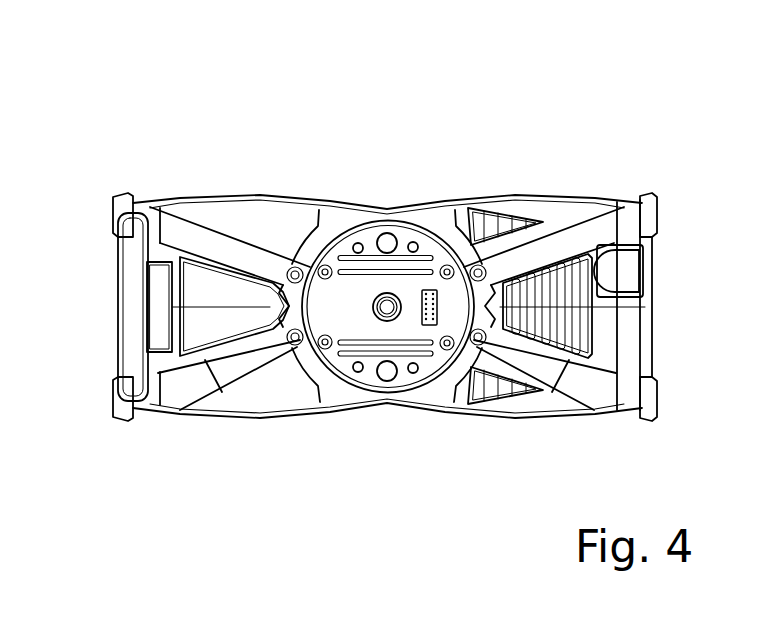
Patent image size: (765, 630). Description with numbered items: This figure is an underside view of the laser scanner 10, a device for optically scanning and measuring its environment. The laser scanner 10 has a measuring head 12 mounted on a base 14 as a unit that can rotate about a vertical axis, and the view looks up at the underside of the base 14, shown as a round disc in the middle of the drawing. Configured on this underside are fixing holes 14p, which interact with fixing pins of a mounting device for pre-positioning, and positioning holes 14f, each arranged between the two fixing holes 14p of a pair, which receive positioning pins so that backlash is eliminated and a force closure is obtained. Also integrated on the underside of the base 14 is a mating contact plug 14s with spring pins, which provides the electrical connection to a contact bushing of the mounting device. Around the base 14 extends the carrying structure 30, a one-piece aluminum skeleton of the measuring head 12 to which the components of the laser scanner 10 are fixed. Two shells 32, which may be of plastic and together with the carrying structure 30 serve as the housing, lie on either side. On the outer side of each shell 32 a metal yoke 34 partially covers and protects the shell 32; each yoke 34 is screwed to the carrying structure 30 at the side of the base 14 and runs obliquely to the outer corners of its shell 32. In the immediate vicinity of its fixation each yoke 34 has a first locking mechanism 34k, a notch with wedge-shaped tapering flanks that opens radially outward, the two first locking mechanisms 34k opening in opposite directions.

The laser scanner 10 is at (198, 455).
The measuring head 12 is at (119, 272).
The base 14 is at (331, 298).
The positioning holes 14f is at (390, 234).
The fixing holes 14p is at (360, 244).
The mating contact plug 14s is at (435, 310).
The carrying structure 30 is at (353, 208).
The shells 32 is at (240, 390).
The yoke 34 is at (215, 237).
The first locking mechanism 34k is at (287, 305).